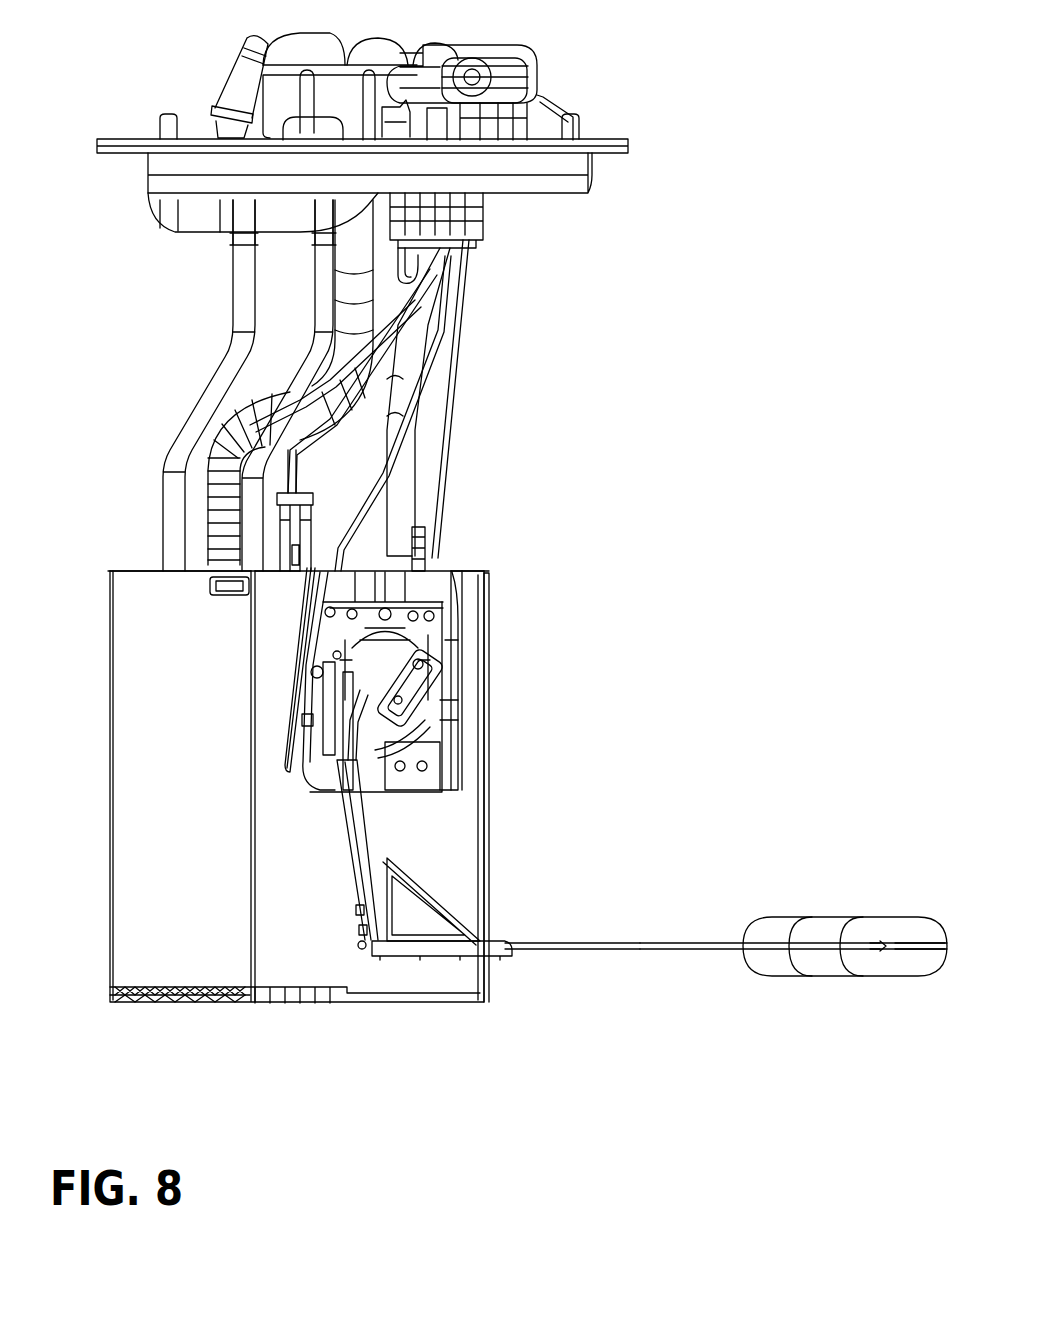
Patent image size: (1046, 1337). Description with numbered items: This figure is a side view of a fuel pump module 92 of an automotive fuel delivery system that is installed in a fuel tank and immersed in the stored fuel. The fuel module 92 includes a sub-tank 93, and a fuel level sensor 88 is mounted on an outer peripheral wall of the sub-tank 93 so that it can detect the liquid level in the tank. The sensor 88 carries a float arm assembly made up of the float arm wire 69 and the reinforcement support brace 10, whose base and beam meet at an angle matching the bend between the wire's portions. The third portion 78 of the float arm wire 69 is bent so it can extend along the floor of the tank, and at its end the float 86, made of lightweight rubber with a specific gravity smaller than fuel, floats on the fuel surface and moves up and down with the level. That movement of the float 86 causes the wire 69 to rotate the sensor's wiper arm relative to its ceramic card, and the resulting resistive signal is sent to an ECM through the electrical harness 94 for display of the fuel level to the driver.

The support brace 10 is at (425, 882).
The float arm wire 69 is at (595, 942).
The third portion 78 is at (636, 952).
The float 86 is at (907, 918).
The fuel level sensor 88 is at (463, 700).
The fuel pump module 92 is at (548, 585).
The sub-tank 93 is at (487, 610).
The electrical harness 94 is at (480, 222).